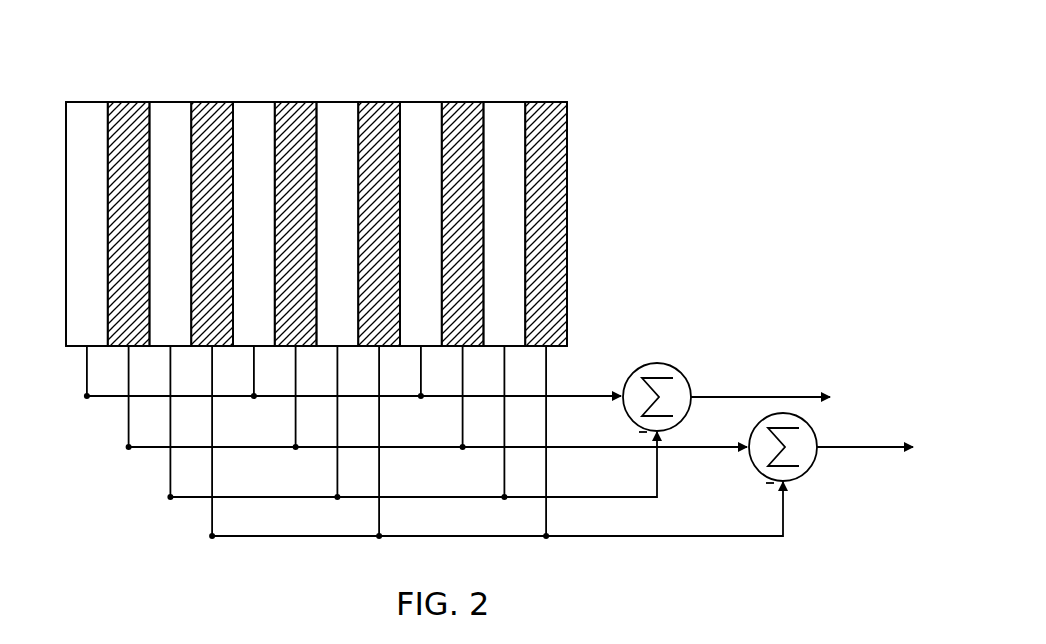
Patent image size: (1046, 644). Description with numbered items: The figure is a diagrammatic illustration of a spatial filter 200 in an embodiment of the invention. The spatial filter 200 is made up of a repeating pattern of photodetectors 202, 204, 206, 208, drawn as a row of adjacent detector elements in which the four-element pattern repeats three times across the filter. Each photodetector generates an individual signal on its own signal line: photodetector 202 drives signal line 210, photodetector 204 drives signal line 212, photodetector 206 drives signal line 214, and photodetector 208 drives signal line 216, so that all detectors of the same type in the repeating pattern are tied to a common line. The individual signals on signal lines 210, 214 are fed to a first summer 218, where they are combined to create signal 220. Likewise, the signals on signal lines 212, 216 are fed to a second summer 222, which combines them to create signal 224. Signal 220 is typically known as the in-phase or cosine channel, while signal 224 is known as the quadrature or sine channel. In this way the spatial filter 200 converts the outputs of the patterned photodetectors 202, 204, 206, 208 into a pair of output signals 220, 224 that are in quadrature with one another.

The spatial filter 200 is at (567, 182).
The photodetector 202 is at (87, 101).
The photodetector 204 is at (129, 101).
The photodetector 206 is at (170, 101).
The photodetector 208 is at (212, 101).
The signal line 210 is at (87, 372).
The signal line 212 is at (129, 423).
The signal line 214 is at (170, 474).
The signal line 216 is at (212, 520).
The summer 218 is at (657, 363).
The in-phase signal 220 is at (747, 395).
The summer 222 is at (807, 471).
The quadrature signal 224 is at (870, 446).